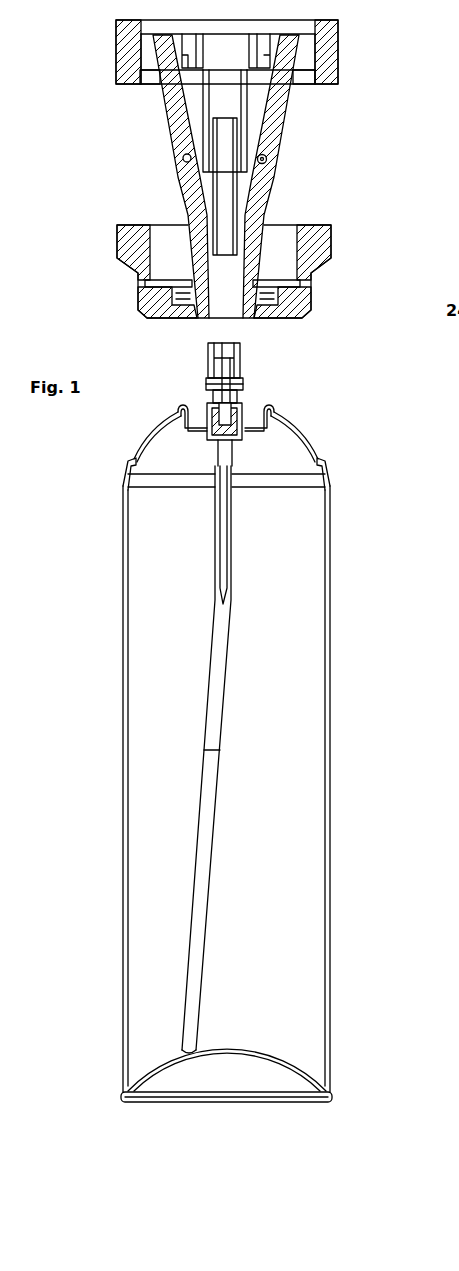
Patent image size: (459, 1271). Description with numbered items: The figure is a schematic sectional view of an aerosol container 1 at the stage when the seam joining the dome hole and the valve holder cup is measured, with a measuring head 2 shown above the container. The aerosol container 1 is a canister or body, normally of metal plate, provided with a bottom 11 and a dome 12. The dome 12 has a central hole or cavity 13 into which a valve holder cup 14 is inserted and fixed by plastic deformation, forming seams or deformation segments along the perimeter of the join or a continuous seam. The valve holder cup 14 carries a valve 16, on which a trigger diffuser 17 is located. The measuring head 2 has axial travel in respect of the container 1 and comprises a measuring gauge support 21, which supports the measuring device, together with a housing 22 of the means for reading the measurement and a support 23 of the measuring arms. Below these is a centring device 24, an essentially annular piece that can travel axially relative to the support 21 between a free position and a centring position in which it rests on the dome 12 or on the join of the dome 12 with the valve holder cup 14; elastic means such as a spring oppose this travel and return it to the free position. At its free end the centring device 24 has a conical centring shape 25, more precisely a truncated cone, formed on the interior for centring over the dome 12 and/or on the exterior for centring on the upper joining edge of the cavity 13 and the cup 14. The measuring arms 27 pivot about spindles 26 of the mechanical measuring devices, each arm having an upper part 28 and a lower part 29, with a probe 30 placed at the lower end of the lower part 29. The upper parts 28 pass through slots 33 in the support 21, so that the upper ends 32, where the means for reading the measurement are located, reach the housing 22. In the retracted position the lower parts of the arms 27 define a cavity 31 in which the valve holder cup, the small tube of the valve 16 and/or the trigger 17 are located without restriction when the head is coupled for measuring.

The aerosol container 1 is at (303, 801).
The measuring head 2 is at (296, 153).
The bottom of the aerosol container 11 is at (280, 1059).
The dome of the aerosol container 12 is at (300, 444).
The central hole or cavity in the dome 13 is at (168, 433).
The valve holder cup 14 is at (206, 411).
The valve 16 is at (244, 411).
The trigger diffuser 17 is at (237, 348).
The support of the measuring device 21 is at (123, 43).
The housing of the means for reading the measurement 22 is at (230, 36).
The support of the measuring arms 23 is at (206, 121).
The centring device 24 is at (126, 244).
The conical centring shape 25 is at (173, 316).
The spindles of the mechanical measuring devices 26 is at (266, 162).
The measuring arms 27 is at (174, 141).
The upper part of the measuring arms 28 is at (283, 106).
The lower part of the measuring arms 29 is at (197, 252).
The probes 30 is at (250, 318).
The cavity for allowing the valve through 31 is at (226, 303).
The upper end of the measuring arms 32 is at (152, 45).
The slots 33 is at (297, 78).